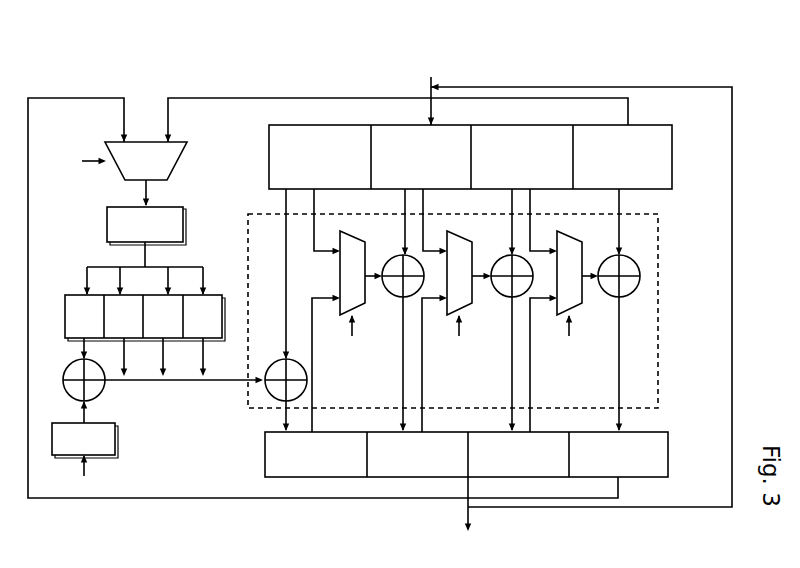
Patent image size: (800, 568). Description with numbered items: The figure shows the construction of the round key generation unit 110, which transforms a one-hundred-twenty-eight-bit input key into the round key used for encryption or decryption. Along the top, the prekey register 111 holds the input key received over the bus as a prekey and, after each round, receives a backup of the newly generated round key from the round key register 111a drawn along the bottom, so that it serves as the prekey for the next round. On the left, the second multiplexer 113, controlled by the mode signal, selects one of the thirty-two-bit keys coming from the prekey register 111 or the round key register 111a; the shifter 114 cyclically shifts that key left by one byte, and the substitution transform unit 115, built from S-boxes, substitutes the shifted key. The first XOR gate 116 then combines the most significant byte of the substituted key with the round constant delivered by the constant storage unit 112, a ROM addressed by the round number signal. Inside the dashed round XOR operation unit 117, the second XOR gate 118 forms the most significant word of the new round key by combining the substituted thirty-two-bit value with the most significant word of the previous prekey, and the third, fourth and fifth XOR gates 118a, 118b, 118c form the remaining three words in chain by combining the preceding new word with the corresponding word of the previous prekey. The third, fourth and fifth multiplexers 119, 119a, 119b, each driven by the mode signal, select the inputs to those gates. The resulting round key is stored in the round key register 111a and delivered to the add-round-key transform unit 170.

The round key generation unit 110 is at (510, 48).
The 128-bit prekey register 111 is at (672, 155).
The 128-bit round key register 111a is at (668, 470).
The constant storage unit 112 is at (117, 440).
The second multiplexer 113 is at (177, 168).
The shifter 114 is at (185, 229).
The substitution transform unit 115 is at (207, 295).
The first XOR gate 116 is at (68, 366).
The round XOR operation unit 117 is at (658, 228).
The second XOR gate 118 is at (277, 367).
The third XOR gate 118a is at (398, 296).
The fourth XOR gate 118b is at (507, 296).
The fifth XOR gate 118c is at (614, 296).
The third multiplexer 119 is at (365, 240).
The fourth multiplexer 119a is at (472, 240).
The fifth multiplexer 119b is at (582, 240).
The add-round-key transform unit 170 is at (457, 516).